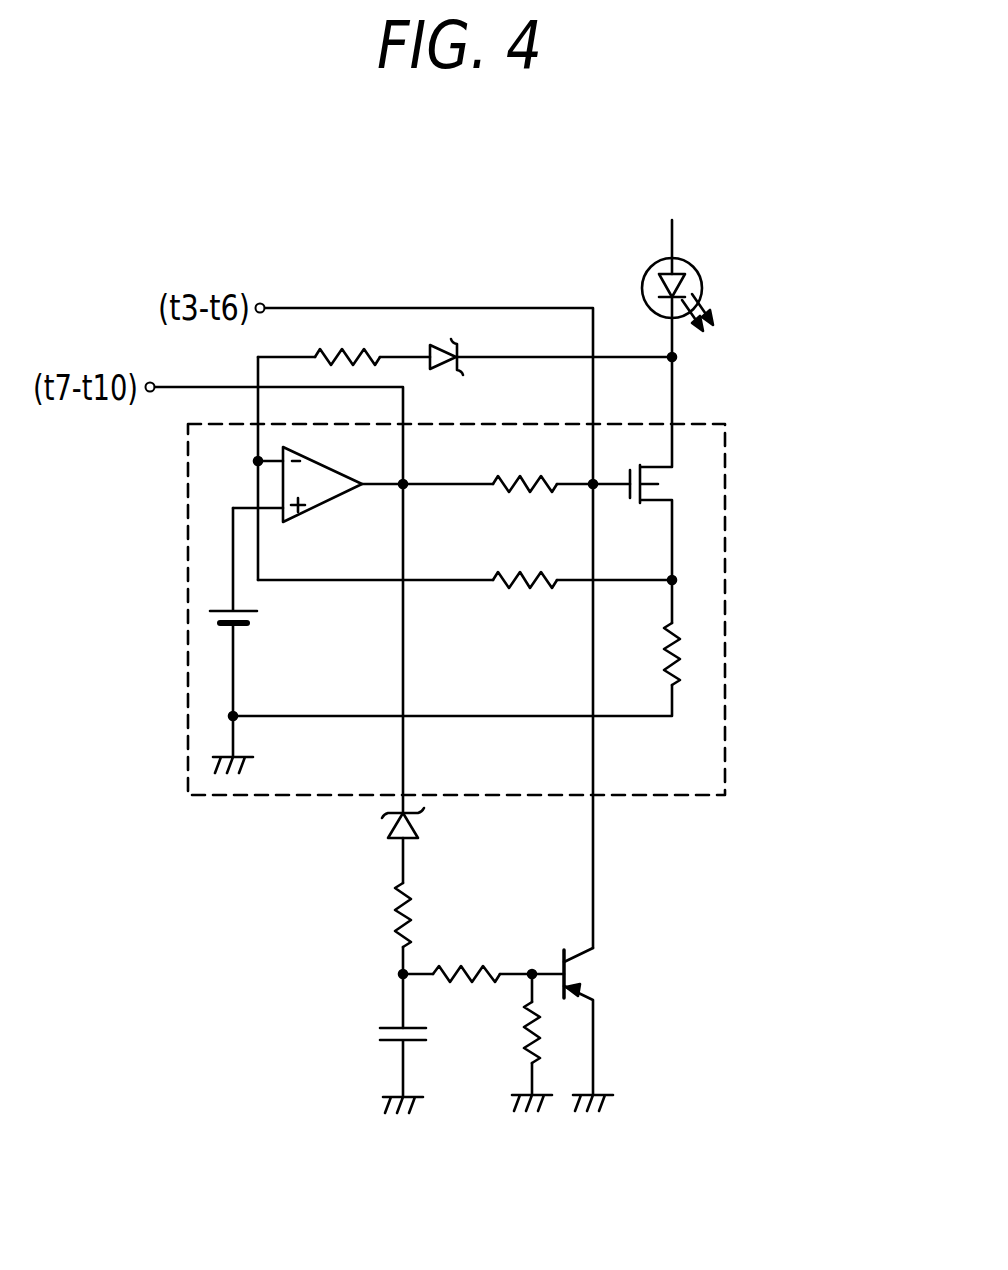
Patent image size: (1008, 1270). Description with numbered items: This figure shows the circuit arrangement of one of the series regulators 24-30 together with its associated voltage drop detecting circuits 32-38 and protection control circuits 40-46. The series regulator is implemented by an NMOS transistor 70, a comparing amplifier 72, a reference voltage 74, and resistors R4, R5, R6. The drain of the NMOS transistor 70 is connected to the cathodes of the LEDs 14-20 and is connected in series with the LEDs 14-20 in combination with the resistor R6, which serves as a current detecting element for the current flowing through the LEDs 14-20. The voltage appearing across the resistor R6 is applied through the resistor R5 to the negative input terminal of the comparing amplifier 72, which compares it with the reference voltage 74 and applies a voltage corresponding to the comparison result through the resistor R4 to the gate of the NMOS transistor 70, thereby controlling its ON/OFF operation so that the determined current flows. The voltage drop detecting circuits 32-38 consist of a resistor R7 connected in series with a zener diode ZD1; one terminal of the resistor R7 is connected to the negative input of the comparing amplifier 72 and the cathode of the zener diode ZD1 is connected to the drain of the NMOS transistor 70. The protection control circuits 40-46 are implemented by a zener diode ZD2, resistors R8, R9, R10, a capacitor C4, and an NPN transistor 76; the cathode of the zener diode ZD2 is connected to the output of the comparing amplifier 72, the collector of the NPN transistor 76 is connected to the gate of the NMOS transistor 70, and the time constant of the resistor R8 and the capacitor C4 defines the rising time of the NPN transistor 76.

The LEDs 14-20 is at (702, 283).
The voltage drop detecting circuits 32-38 is at (399, 332).
The series regulators 24-30 is at (727, 548).
The protection control circuits 40-46 is at (258, 884).
The NMOS transistor 70 is at (668, 478).
The comparing amplifier 72 is at (325, 505).
The reference voltage 74 is at (250, 618).
The NPN transistor 76 is at (578, 968).
The resistor R4 is at (561, 508).
The resistor R5 is at (465, 602).
The resistor R6 is at (456, 648).
The resistor R7 is at (344, 337).
The resistor R8 is at (379, 955).
The resistor R9 is at (483, 955).
The resistor R10 is at (504, 1042).
The zener diode ZD1 is at (551, 347).
The zener diode ZD2 is at (436, 845).
The capacitor C4 is at (385, 1025).